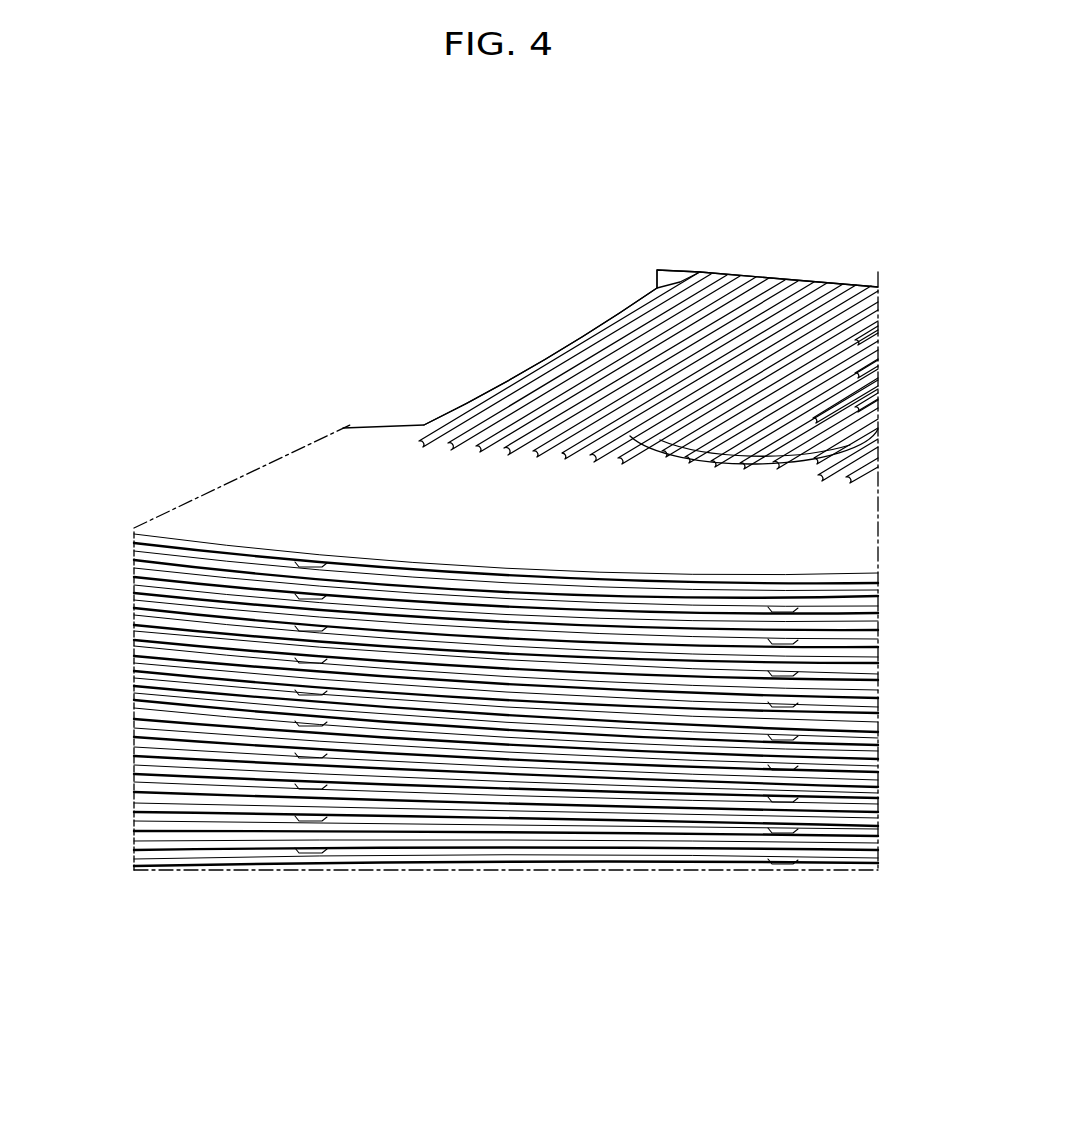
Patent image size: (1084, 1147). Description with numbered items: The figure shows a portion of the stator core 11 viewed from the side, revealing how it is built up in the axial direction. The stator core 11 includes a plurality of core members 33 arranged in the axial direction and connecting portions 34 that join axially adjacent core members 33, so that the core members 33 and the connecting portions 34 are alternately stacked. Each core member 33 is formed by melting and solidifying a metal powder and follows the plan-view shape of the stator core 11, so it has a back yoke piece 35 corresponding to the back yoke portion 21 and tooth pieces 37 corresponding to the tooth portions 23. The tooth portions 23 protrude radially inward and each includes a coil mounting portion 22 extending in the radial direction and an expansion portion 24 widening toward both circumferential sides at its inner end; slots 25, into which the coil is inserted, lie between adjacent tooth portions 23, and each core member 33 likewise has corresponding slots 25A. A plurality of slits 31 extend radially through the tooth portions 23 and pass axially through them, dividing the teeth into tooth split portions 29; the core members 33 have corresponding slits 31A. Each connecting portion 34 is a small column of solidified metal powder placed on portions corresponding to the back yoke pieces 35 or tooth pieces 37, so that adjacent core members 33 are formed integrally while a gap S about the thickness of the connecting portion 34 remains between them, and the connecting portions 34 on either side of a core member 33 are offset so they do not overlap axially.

The stator core 11 is at (358, 330).
The back yoke portion 21 is at (191, 832).
The coil mounting portion 22 is at (633, 307).
The tooth portion 23 is at (828, 283).
The expansion portion 24 is at (663, 272).
The slot 25 is at (822, 420).
The slot of core member 25A is at (748, 462).
The tooth split portion 29 is at (763, 282).
The slit 31 is at (712, 320).
The slit of core member 31A is at (582, 358).
The core member 33 is at (134, 588).
The connecting portion 34 is at (300, 663).
The back yoke piece 35 is at (220, 510).
The tooth piece 37 is at (598, 327).
The gap S is at (390, 614).